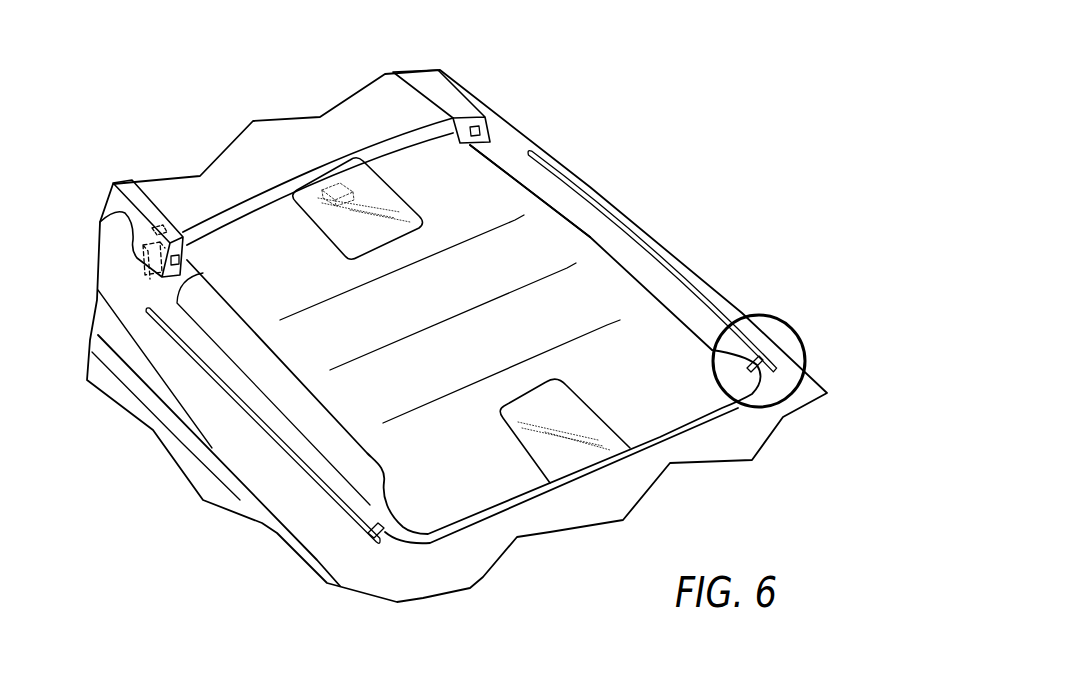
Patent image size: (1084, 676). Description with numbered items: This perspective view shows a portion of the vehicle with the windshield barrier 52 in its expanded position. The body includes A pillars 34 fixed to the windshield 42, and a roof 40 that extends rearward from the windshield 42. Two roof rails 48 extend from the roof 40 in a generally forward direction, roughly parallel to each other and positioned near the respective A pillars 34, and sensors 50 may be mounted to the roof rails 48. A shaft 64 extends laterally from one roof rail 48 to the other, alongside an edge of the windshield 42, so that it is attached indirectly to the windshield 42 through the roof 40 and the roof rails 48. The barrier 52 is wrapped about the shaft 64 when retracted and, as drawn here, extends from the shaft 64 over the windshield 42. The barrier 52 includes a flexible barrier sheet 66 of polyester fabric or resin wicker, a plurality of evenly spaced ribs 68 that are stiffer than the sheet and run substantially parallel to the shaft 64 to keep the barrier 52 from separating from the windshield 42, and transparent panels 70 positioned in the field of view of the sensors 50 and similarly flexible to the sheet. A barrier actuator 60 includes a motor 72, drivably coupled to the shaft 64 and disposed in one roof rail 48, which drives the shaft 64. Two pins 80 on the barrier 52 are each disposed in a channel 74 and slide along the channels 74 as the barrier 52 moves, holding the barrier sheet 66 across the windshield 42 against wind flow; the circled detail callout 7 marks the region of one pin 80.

The detail region shown in FIG. 7 is at (781, 312).
The A pillar 34 is at (650, 226).
The roof 40 is at (284, 160).
The windshield 42 is at (294, 399).
The roof rail 48 is at (458, 83).
The sensor 50 is at (478, 141).
The barrier 52 is at (278, 527).
The barrier actuator 60 is at (140, 262).
The shaft 64 is at (374, 151).
The barrier sheet 66 is at (502, 172).
The rib 68 is at (609, 324).
The transparent panel 70 is at (332, 244).
The motor 72 is at (157, 238).
The channel 74 is at (689, 268).
The pin 80 is at (797, 398).